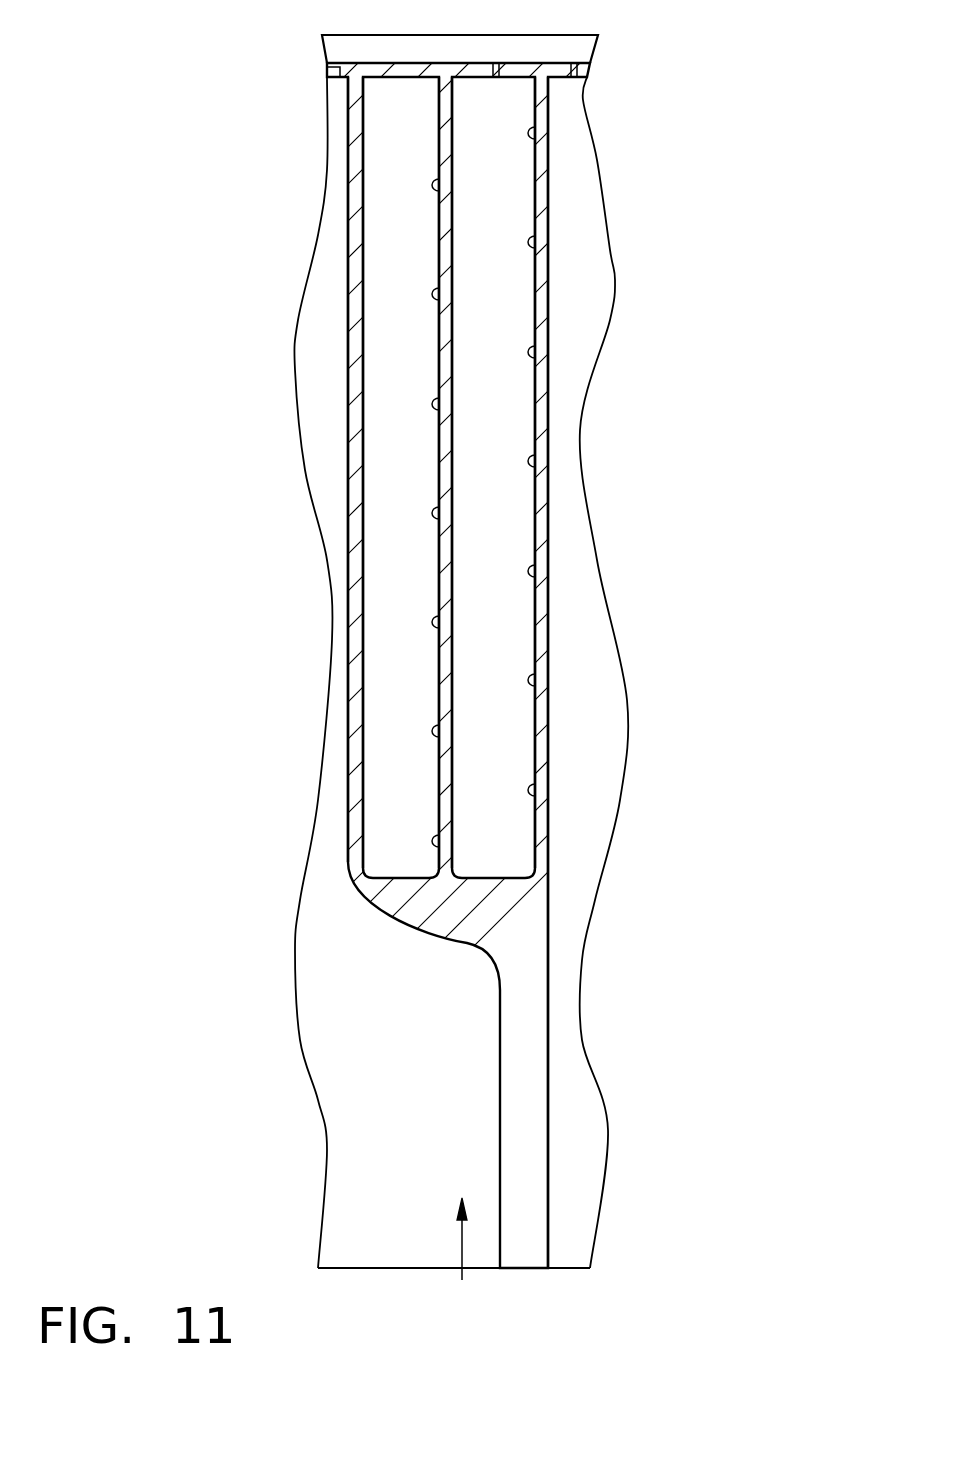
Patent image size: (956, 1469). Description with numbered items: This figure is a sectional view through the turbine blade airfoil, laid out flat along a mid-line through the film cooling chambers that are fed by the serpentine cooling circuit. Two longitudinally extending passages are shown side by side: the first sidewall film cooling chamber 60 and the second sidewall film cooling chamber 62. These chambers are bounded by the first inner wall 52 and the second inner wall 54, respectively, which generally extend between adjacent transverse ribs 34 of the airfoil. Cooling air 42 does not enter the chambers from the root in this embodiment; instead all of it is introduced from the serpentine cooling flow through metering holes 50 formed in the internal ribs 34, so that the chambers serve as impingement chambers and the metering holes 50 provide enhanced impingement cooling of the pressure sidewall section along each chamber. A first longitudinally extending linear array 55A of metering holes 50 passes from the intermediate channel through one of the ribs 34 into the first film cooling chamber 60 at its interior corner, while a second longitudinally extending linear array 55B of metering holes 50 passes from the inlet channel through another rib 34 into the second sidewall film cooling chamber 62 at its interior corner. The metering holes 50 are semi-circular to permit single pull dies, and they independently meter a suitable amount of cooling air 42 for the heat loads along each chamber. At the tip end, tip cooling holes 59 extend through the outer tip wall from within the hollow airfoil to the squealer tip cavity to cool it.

The transverse ribs 34 is at (541, 388).
The cooling air 42 is at (461, 1241).
The metering holes 50 is at (486, 481).
The first inner wall 52 is at (351, 426).
The second inner wall 54 is at (453, 294).
The first longitudinally extending linear array 55A is at (424, 292).
The second longitudinally extending linear array 55B is at (548, 218).
The tip cooling holes 59 is at (580, 63).
The first sidewall film cooling chamber 60 is at (407, 862).
The second sidewall film cooling chamber 62 is at (510, 862).